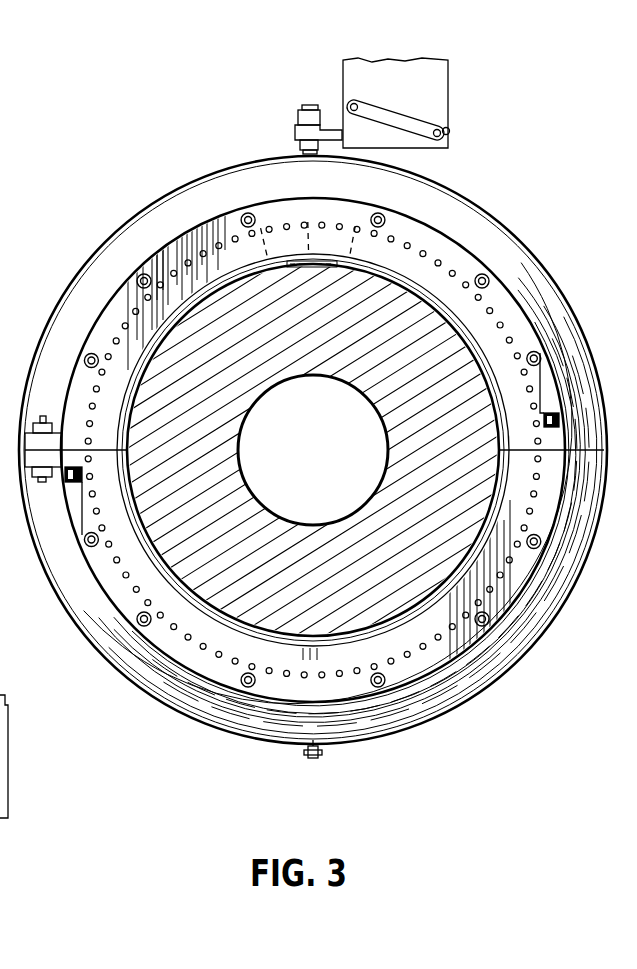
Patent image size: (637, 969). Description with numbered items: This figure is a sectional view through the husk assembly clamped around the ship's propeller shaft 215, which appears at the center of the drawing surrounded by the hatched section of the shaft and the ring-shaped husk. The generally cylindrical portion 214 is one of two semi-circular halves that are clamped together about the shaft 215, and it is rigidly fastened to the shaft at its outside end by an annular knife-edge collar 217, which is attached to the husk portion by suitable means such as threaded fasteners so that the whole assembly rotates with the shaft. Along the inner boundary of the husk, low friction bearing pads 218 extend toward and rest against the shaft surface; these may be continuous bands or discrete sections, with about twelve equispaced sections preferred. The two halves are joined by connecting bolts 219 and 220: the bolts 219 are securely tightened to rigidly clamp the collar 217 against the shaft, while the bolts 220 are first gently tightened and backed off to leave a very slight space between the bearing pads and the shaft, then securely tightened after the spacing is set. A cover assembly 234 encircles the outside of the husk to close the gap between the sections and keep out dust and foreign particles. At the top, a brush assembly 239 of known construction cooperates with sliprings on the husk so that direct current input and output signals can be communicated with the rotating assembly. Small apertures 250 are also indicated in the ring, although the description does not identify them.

The second generally cylindrical portion 214 is at (245, 717).
The ship's propeller shaft 215 is at (185, 550).
The annular knife-edge collar 217 is at (102, 565).
The low friction bearing pads 218 is at (308, 233).
The connecting bolts 219 is at (75, 483).
The connecting bolts 220 is at (50, 423).
The cover assembly 234 is at (168, 192).
The brush assembly 239 is at (297, 109).
The small apertures 250 is at (104, 357).